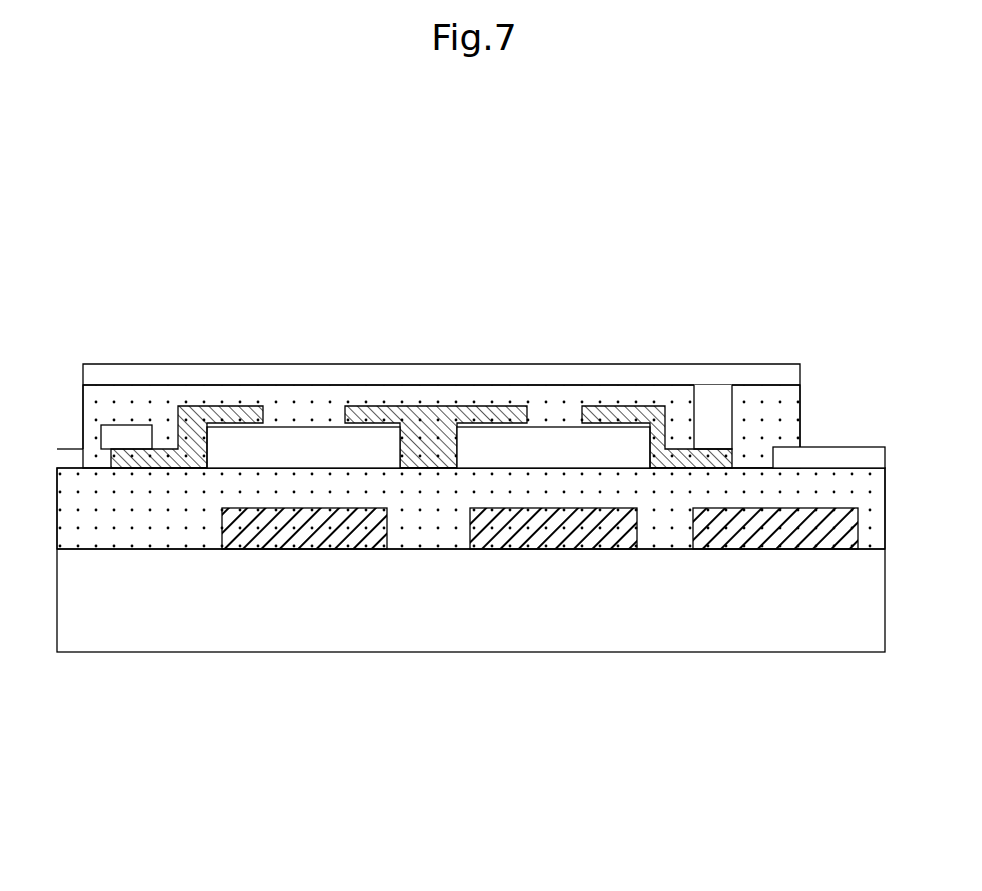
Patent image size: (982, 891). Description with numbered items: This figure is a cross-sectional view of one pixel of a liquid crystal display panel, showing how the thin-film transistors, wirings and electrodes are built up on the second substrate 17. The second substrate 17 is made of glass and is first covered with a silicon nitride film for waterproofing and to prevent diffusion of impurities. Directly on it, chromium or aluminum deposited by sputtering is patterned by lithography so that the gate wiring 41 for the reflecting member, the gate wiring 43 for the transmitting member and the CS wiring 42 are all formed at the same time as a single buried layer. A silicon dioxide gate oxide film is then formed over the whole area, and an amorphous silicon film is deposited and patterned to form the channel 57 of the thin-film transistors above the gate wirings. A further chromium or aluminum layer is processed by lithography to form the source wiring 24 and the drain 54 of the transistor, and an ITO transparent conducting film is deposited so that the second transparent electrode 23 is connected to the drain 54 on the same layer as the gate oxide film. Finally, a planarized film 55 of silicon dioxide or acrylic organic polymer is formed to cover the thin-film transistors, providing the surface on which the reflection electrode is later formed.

The second substrate 17 is at (582, 613).
The second transparent electrode 23 is at (77, 462).
The source wiring 24 is at (440, 427).
The gate wiring for the reflecting member 41 is at (525, 530).
The CS wiring 42 is at (782, 535).
The gate wiring for the transmitting member 43 is at (273, 533).
The drain 54 is at (188, 418).
The planarized film 55 is at (593, 393).
The channel 57 is at (317, 438).